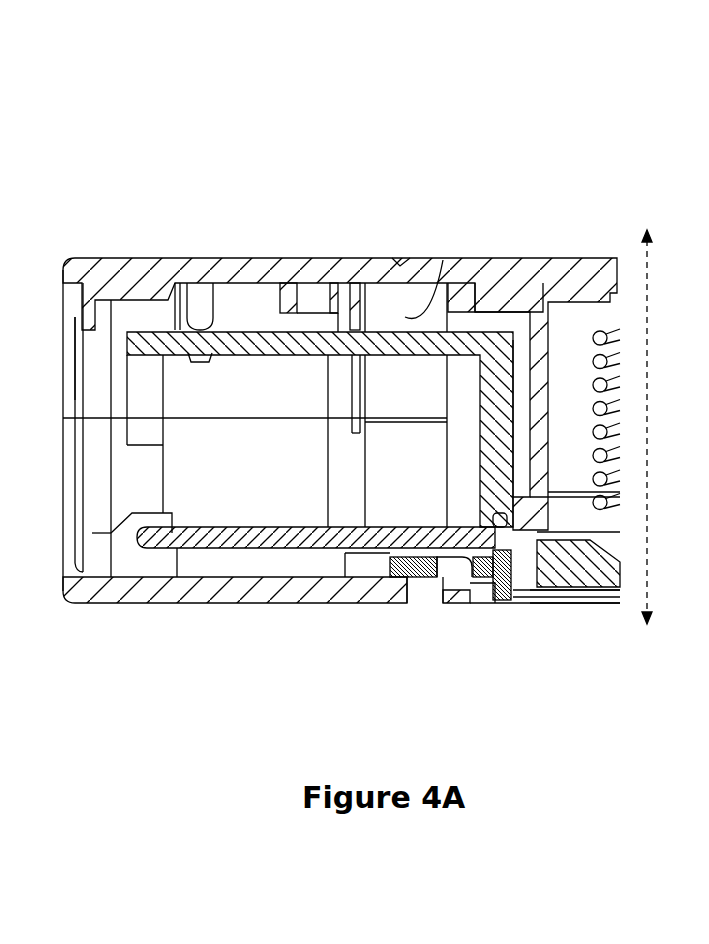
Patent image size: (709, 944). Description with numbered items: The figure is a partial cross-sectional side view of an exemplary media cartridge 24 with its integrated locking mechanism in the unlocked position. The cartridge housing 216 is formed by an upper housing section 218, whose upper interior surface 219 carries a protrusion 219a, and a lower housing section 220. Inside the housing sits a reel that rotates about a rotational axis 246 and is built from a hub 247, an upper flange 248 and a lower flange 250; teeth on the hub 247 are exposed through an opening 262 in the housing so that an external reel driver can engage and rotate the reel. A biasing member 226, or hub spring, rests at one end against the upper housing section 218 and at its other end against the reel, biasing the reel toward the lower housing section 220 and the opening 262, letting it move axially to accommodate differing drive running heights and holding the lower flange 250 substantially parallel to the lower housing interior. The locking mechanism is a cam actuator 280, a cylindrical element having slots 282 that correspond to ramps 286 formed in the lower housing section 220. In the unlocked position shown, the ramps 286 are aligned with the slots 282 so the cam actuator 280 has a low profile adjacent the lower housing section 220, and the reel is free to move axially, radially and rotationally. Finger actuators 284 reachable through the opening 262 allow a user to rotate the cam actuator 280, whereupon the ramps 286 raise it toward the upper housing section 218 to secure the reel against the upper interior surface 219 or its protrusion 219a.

The cartridge 24 is at (226, 104).
The cartridge housing 216 is at (75, 315).
The upper housing section 218 is at (297, 270).
The upper interior surface 219 is at (405, 317).
The protrusion 219a is at (465, 268).
The lower housing section 220 is at (140, 590).
The biasing member 226 is at (618, 335).
The rotational axis 246 is at (652, 272).
The hub 247 is at (495, 393).
The upper flange 248 is at (240, 340).
The lower flange 250 is at (253, 540).
The opening 262 is at (592, 603).
The cam actuator 280 is at (407, 570).
The slots 282 is at (442, 578).
The finger actuators 284 is at (500, 578).
The ramps 286 is at (453, 563).